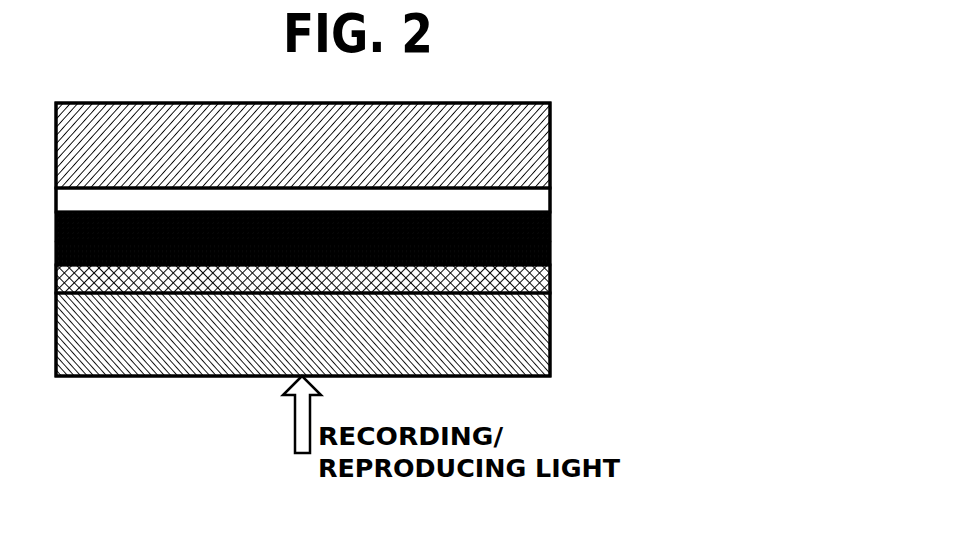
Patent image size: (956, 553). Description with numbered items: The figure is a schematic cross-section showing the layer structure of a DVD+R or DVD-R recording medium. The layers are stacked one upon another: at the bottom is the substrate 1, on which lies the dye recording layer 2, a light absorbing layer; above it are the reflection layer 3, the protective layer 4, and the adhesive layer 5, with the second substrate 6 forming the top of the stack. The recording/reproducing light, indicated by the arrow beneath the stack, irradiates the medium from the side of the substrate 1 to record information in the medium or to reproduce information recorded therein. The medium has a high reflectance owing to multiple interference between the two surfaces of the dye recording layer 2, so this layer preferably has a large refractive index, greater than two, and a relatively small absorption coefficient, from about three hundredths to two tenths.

The substrate 1 is at (537, 332).
The dye recording layer 2 is at (550, 285).
The reflection layer 3 is at (550, 253).
The protective layer 4 is at (550, 228).
The adhesive layer 5 is at (535, 202).
The second substrate 6 is at (540, 142).